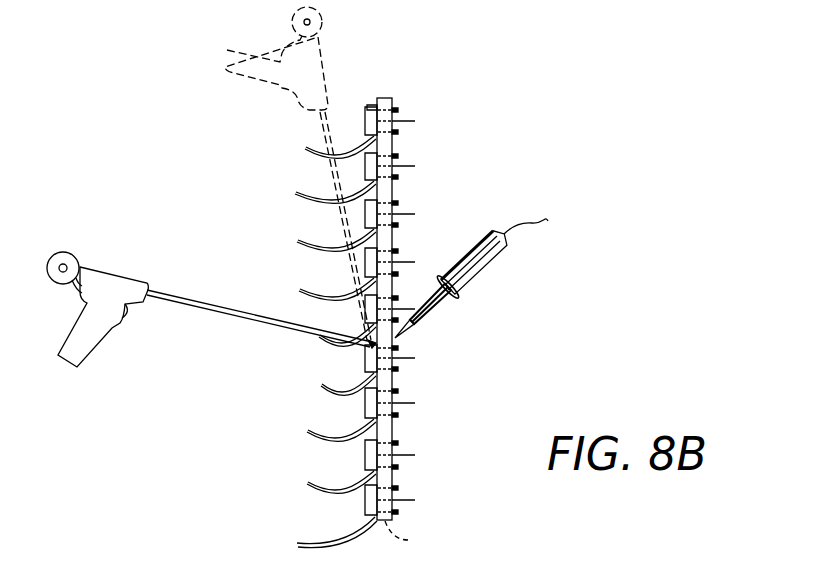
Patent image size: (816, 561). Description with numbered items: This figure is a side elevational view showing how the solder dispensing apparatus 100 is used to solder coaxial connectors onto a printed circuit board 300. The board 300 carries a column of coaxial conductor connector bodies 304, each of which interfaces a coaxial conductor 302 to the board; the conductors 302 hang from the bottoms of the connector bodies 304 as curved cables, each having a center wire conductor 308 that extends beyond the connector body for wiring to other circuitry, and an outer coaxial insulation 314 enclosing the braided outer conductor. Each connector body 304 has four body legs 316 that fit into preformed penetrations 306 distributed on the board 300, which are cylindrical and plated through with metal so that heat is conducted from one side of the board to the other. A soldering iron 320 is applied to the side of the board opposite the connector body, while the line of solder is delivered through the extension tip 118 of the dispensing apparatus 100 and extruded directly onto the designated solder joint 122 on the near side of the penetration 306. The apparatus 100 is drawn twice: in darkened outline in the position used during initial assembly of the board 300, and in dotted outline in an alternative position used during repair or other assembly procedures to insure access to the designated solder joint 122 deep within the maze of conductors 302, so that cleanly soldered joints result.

The solder dispensing apparatus 100 is at (225, 62).
The solder dispensing extension tip 118 is at (216, 317).
The designated solder joint 122 is at (370, 346).
The printed circuit board 300 is at (512, 143).
The coaxial conductor 302 is at (328, 202).
The coaxial conductor connector body 304 is at (372, 101).
The preformed penetration 306 is at (396, 110).
The center wire conductor 308 is at (396, 165).
The outer coaxial insulation 314 is at (322, 152).
The body legs 316 is at (393, 255).
The soldering iron 320 is at (463, 265).